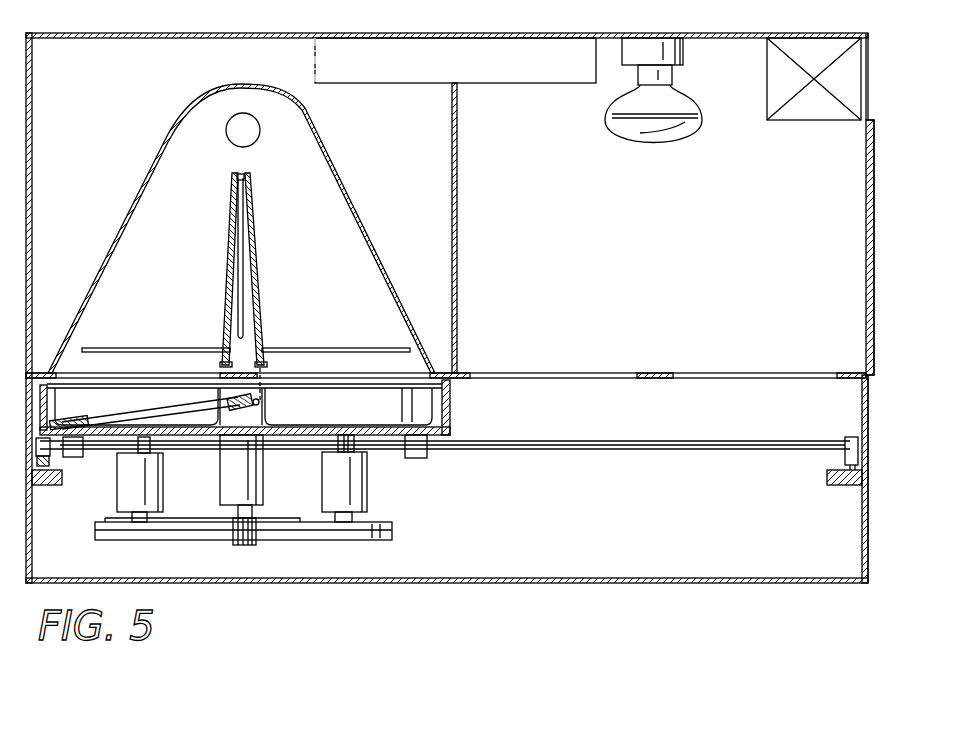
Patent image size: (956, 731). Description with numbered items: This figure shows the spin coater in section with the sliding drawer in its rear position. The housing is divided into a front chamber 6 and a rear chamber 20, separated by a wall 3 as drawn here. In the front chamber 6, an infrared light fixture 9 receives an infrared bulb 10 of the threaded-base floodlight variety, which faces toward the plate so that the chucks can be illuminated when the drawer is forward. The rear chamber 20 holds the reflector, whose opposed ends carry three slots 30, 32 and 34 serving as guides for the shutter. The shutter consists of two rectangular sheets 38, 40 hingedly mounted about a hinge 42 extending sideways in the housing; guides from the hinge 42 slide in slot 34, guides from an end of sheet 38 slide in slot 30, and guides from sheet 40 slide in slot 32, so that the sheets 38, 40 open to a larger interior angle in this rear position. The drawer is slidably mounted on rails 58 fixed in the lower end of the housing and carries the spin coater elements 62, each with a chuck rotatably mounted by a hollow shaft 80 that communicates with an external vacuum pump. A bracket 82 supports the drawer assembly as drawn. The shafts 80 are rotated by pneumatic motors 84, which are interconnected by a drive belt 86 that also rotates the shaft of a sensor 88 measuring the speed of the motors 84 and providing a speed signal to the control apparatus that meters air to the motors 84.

The rear chamber 20 is at (100, 62).
The front chamber 6 is at (840, 155).
The partition wall 3 is at (458, 228).
The infrared light fixture 9 is at (680, 52).
The infrared bulb 10 is at (660, 128).
The hinge 42 is at (242, 175).
The rectangular sheet 38 is at (228, 228).
The rectangular sheet 40 is at (256, 215).
The slot 34 is at (243, 250).
The slot 30 is at (135, 348).
The slot 32 is at (325, 348).
The spin coater element 62 is at (80, 382).
The rail 58 is at (597, 448).
The bracket 82 is at (138, 452).
The pneumatic motor 84 is at (148, 492).
The sensor 88 is at (230, 480).
The hollow shaft 80 is at (343, 450).
The drive belt 86 is at (328, 548).